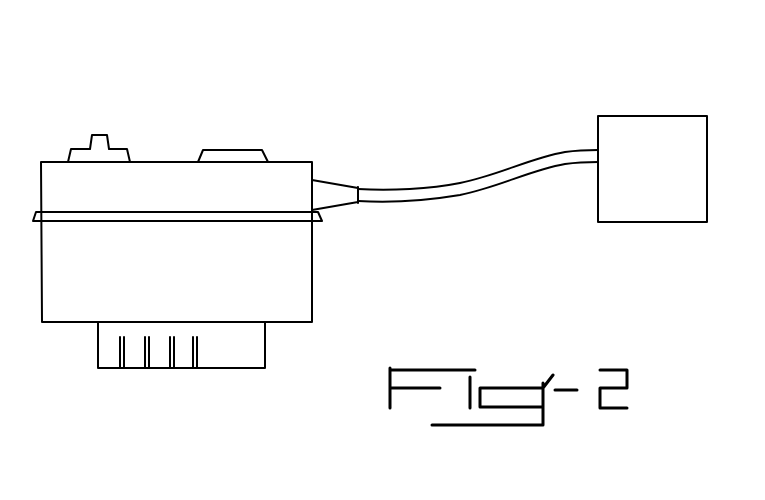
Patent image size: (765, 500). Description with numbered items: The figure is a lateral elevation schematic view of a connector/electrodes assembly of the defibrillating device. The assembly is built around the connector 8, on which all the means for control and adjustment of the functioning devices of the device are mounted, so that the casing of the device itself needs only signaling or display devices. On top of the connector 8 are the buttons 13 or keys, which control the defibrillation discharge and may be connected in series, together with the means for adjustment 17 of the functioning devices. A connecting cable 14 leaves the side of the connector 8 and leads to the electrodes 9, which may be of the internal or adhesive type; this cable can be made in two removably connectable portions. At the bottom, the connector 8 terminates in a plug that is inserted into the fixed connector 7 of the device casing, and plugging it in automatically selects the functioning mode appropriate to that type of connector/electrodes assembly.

The fixed connector 7 is at (200, 367).
The connector 8 is at (93, 372).
The electrodes 9 is at (642, 157).
The buttons 13 is at (255, 153).
The connecting cable 14 is at (487, 183).
The adjustment means 17 is at (106, 134).